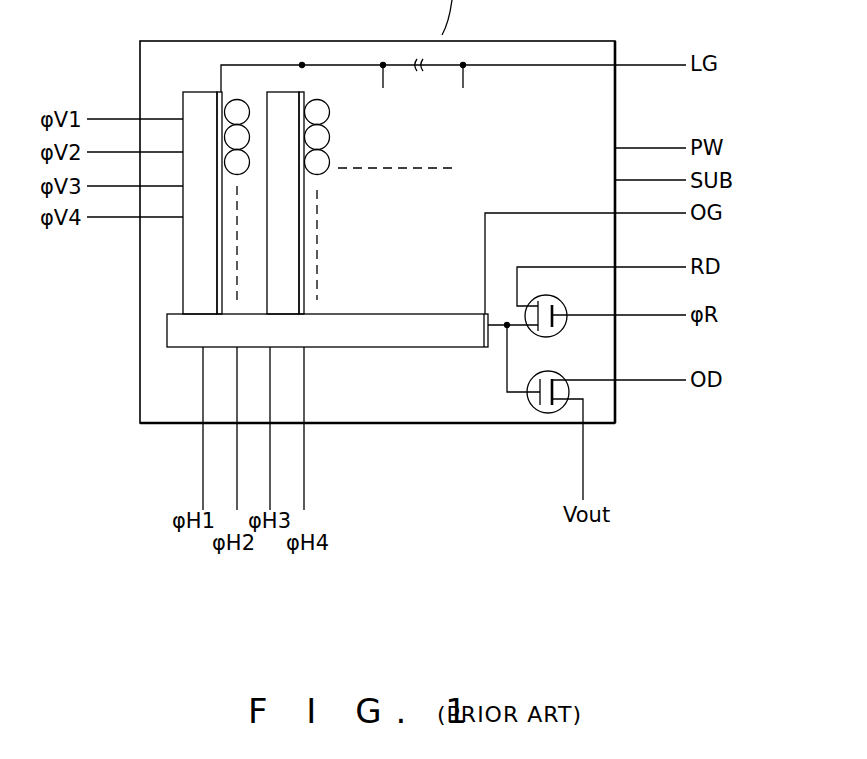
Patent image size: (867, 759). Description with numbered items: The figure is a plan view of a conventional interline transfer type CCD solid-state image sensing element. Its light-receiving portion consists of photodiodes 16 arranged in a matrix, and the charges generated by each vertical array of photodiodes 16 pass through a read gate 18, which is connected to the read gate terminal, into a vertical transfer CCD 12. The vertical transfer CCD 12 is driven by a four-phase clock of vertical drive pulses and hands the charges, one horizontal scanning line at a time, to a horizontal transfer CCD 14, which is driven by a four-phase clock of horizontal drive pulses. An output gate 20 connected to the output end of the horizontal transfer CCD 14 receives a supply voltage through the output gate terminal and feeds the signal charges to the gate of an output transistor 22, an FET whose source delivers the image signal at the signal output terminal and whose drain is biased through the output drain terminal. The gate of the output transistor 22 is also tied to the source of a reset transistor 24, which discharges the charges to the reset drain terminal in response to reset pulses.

The vertical transfer CCD 12 is at (198, 97).
The horizontal transfer CCD 14 is at (192, 338).
The photodiodes 16 is at (240, 110).
The read gate 18 is at (222, 91).
The output gate 20 is at (486, 347).
The output transistor 22 is at (570, 394).
The reset transistor 24 is at (559, 333).